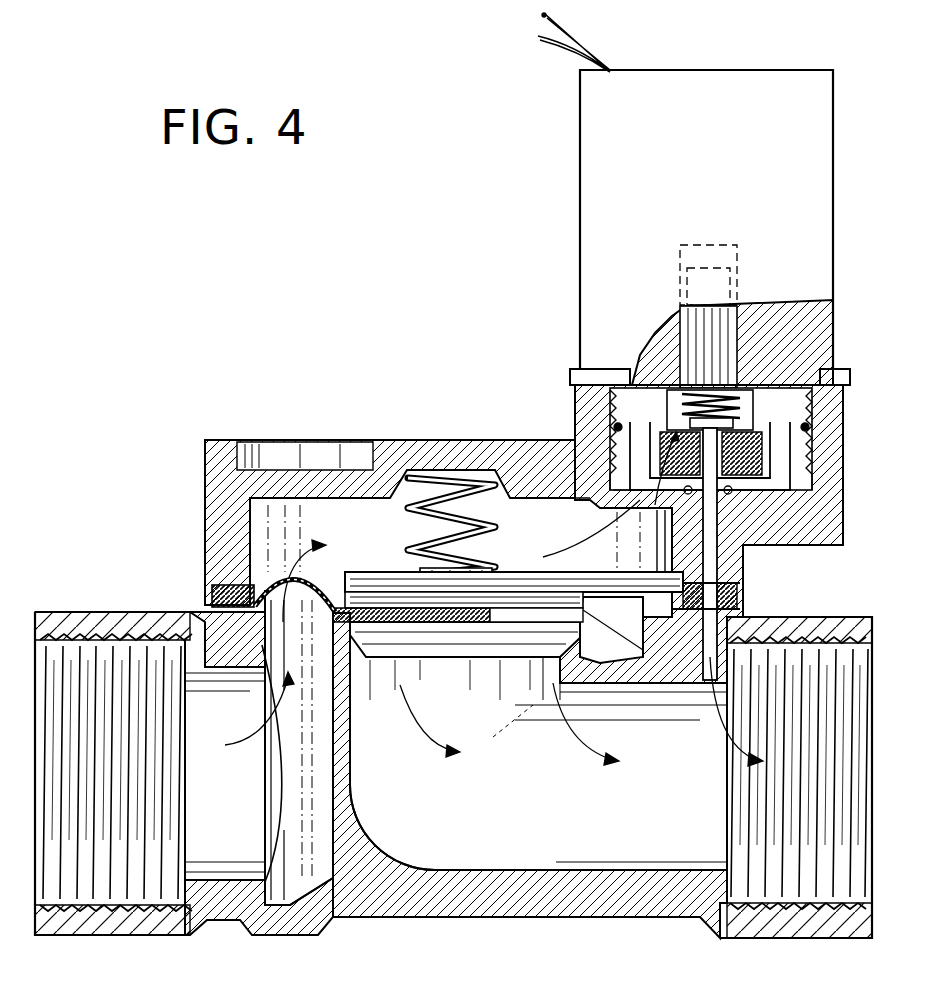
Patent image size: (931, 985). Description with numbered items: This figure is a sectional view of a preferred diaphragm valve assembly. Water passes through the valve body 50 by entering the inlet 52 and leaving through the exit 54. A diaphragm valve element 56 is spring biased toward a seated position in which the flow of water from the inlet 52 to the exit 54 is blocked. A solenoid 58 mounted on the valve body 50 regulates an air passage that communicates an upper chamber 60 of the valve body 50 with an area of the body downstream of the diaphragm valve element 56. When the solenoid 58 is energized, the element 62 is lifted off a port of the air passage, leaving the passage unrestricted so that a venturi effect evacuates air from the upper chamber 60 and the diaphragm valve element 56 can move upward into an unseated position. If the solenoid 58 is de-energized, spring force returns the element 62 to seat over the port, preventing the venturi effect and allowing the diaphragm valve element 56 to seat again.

The valve body 50 is at (205, 503).
The inlet 52 is at (92, 610).
The exit 54 is at (843, 615).
The diaphragm valve element 56 is at (452, 660).
The solenoid 58 is at (835, 226).
The upper chamber 60 is at (358, 533).
The element 62 is at (742, 418).